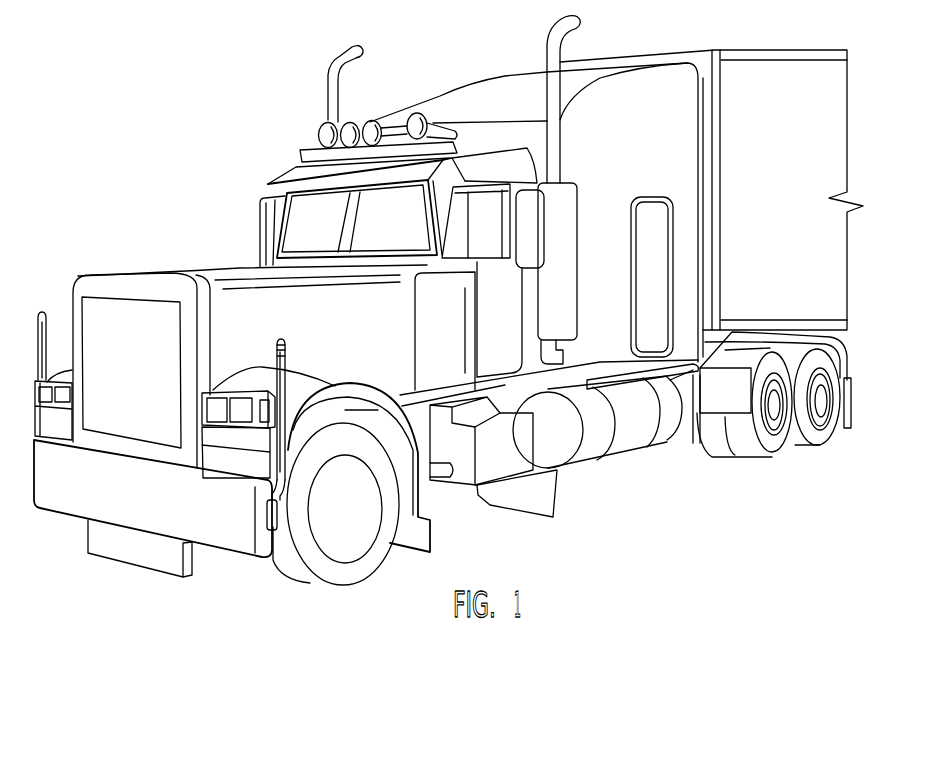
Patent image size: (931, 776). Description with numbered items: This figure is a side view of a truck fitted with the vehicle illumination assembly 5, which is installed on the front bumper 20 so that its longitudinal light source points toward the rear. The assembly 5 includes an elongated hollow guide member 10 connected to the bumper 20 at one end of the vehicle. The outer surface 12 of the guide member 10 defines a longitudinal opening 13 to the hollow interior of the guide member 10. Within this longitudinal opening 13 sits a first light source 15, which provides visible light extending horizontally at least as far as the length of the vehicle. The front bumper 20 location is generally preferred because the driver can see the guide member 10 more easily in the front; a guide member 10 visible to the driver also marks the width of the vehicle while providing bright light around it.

The vehicle illumination assembly 5 is at (448, 352).
The elongated hollow guide member 10 is at (307, 418).
The outer surface 12 is at (276, 362).
The longitudinal opening 13 is at (287, 365).
The first light source 15 is at (288, 355).
The bumper 20 is at (211, 530).